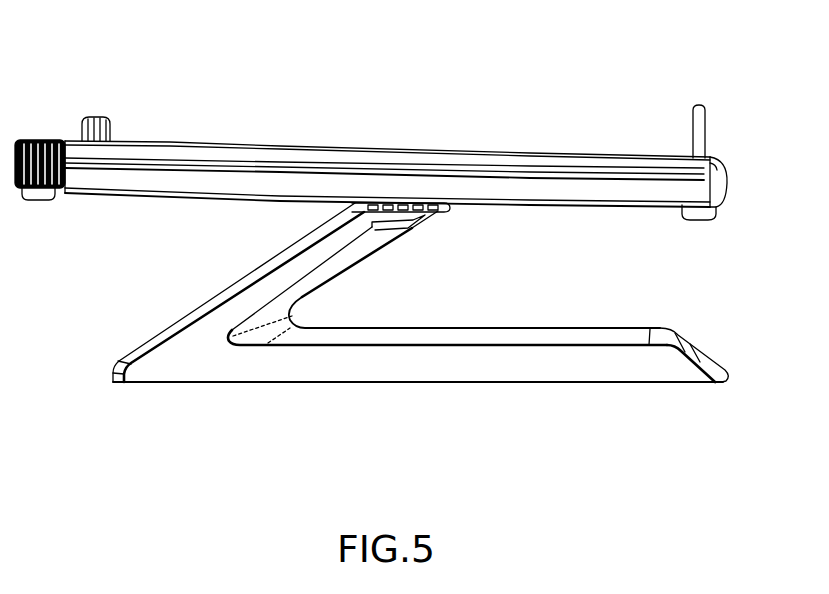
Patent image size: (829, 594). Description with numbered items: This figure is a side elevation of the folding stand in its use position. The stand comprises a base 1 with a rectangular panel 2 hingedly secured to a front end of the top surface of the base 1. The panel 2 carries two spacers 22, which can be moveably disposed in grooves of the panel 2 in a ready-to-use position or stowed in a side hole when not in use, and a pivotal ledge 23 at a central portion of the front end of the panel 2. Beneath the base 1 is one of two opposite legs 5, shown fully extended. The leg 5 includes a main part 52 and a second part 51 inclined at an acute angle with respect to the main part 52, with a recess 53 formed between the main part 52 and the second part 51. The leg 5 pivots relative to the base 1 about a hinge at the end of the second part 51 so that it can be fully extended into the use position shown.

The base 1 is at (113, 177).
The panel 2 is at (277, 157).
The spacer 22 is at (90, 110).
The pivotal ledge 23 is at (698, 103).
The leg 5 is at (392, 324).
The second part 51 is at (253, 293).
The main part 52 is at (503, 357).
The recess 53 is at (565, 290).